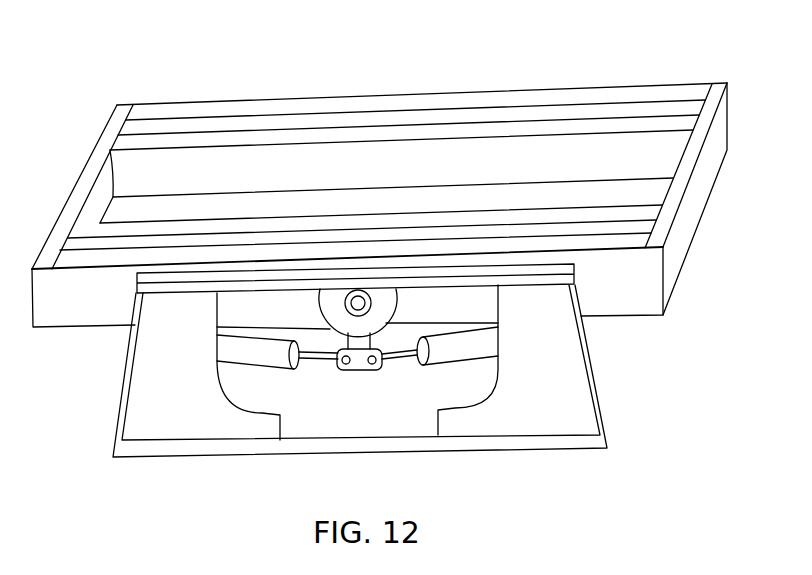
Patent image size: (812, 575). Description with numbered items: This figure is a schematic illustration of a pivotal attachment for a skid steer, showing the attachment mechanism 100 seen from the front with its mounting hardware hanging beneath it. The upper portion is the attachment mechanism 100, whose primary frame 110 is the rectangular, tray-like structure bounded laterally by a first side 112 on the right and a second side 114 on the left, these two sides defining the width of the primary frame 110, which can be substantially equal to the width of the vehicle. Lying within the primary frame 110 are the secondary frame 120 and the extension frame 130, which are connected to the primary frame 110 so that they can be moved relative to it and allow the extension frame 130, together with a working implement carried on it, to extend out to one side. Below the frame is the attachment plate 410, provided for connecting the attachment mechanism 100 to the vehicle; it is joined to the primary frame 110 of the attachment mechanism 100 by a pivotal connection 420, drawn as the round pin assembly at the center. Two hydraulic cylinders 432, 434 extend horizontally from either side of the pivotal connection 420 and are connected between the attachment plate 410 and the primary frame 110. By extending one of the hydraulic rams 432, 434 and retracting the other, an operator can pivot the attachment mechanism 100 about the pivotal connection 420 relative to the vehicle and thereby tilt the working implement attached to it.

The attachment mechanism 100 is at (558, 61).
The primary frame 110 is at (70, 305).
The first side 112 is at (711, 163).
The second side 114 is at (72, 197).
The secondary frame 120 is at (200, 125).
The extension frame 130 is at (295, 130).
The attachment plate 410 is at (580, 384).
The pivotal connection 420 is at (368, 308).
The hydraulic cylinder 432 is at (257, 350).
The hydraulic cylinder 434 is at (465, 345).